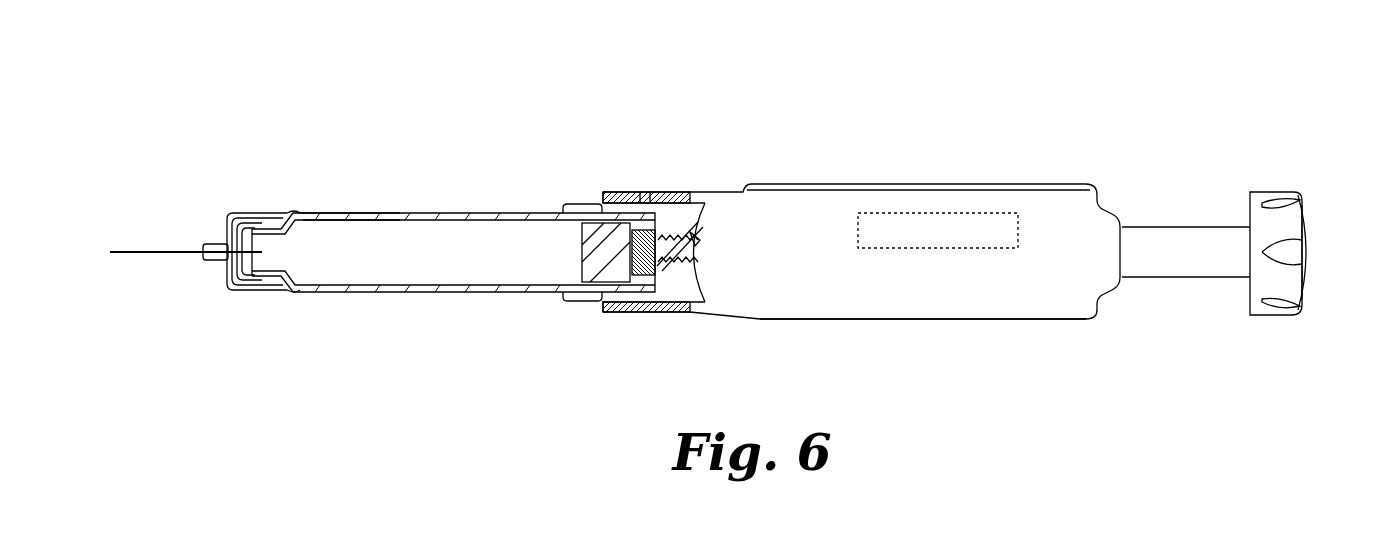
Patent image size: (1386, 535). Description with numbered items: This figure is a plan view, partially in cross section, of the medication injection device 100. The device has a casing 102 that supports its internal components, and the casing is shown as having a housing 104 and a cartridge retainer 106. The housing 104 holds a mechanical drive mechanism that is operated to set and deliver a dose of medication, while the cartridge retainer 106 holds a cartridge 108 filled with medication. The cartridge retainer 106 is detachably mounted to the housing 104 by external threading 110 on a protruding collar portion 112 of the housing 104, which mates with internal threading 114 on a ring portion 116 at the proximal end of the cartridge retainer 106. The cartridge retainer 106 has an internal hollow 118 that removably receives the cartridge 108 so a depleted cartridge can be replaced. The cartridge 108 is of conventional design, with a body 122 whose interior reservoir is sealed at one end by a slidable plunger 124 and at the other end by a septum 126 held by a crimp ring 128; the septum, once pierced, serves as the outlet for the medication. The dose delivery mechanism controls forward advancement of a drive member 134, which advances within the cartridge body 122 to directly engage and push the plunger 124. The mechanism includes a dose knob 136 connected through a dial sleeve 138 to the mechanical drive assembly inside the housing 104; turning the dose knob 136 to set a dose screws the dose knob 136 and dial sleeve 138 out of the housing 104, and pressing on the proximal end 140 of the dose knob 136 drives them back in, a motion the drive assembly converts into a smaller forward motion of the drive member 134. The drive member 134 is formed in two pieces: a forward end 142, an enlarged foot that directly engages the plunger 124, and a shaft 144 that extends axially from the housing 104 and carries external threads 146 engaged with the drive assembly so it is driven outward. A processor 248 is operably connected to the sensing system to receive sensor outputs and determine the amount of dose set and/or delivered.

The medication injection device 100 is at (890, 138).
The casing 102 is at (1042, 212).
The housing 104 is at (1040, 305).
The cartridge retainer 106 is at (414, 180).
The cartridge 108 is at (474, 293).
The external threading 110 is at (615, 192).
The protruding collar portion 112 is at (640, 204).
The internal threading 114 is at (641, 313).
The ring portion 116 is at (614, 313).
The internal hollow 118 is at (277, 216).
The body 122 is at (355, 212).
The plunger 124 is at (586, 248).
The septum 126 is at (256, 253).
The crimp ring 128 is at (252, 278).
The drive member 134 is at (672, 280).
The dose knob 136 is at (1293, 222).
The dial sleeve 138 is at (1178, 270).
The proximal end 140 is at (1310, 268).
The forward end 142 is at (702, 222).
The shaft 144 is at (694, 262).
The external threads 146 is at (700, 228).
The processor 248 is at (965, 213).